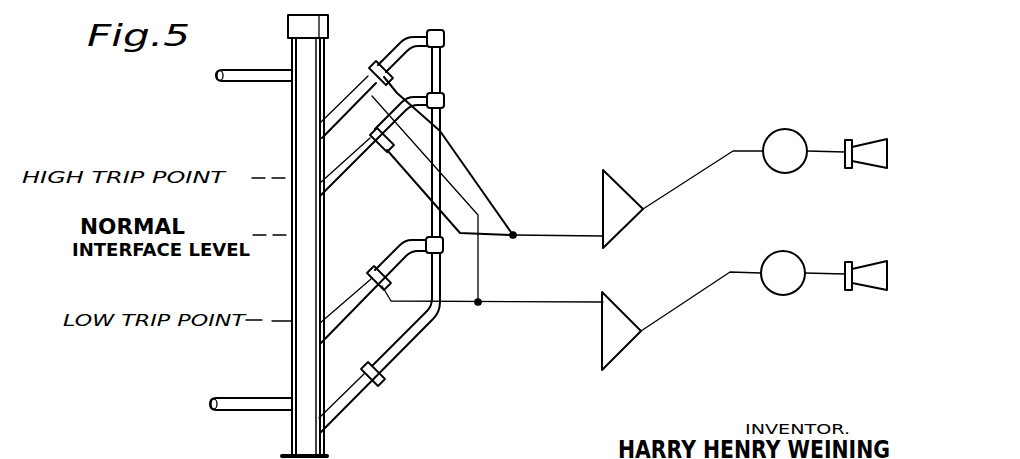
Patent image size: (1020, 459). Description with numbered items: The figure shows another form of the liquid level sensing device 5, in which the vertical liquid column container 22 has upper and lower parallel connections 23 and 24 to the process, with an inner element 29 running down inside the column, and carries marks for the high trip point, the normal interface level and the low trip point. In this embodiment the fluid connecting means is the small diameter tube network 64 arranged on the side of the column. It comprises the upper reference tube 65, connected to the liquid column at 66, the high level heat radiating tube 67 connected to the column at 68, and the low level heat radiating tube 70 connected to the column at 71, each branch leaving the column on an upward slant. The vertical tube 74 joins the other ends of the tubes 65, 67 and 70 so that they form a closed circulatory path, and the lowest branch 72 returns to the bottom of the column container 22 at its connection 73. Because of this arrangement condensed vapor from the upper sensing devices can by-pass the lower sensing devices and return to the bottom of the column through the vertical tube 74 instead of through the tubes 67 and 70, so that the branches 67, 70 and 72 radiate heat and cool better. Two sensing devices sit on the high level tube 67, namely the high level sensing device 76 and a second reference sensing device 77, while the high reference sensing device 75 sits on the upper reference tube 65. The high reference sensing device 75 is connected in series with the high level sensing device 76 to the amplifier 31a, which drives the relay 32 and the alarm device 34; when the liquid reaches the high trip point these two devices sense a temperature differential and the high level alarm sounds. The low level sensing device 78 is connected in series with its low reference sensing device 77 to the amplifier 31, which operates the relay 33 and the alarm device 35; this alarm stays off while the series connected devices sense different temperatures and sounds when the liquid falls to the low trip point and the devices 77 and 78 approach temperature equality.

The liquid level sensing device 5 is at (317, 27).
The liquid column container 22 is at (305, 105).
The upper parallel connection 23 is at (266, 70).
The lower parallel connection 24 is at (244, 398).
The probe rod 29 is at (300, 234).
The amplifier 31 is at (632, 278).
The amplifier 31a is at (615, 184).
The relay 32 is at (792, 129).
The relay 33 is at (801, 226).
The alarm device 34 is at (883, 139).
The alarm device 35 is at (884, 261).
The small diameter tube network 64 is at (446, 39).
The upper reference tube 65 is at (350, 88).
The connection of upper reference tube 66 is at (321, 120).
The high level heat radiating tube 67 is at (350, 140).
The connection of high level tube 68 is at (324, 178).
The low level heat radiating tube 70 is at (355, 284).
The connection of low level tube 71 is at (321, 318).
The branch 72 is at (355, 386).
The lower sensor lead 73 is at (318, 414).
The vertical tube 74 is at (440, 125).
The high reference sensing device 75 is at (383, 58).
The high level sensing device 76 is at (384, 146).
The second reference sensing device 77 is at (391, 88).
The low level sensing device 78 is at (364, 300).